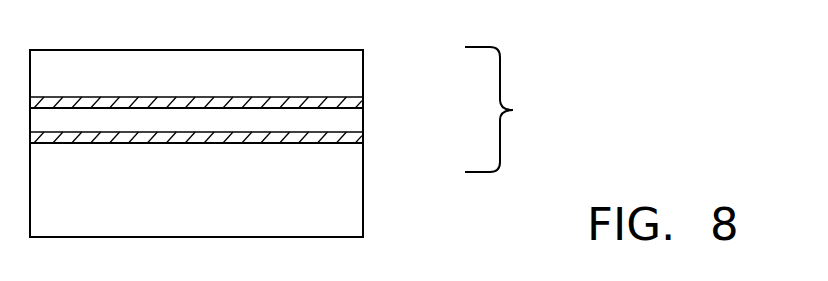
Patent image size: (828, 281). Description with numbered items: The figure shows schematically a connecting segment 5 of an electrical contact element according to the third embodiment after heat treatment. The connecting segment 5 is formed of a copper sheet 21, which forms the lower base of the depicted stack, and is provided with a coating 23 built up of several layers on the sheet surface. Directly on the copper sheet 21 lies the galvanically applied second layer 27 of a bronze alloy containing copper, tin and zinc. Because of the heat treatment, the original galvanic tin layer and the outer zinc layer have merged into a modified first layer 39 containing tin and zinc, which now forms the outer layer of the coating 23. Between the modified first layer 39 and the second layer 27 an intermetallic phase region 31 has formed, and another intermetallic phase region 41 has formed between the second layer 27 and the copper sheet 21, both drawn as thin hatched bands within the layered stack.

The connecting segment 5 is at (493, 193).
The modified first layer 39 is at (343, 75).
The intermetallic phase region 31 is at (355, 101).
The second layer 27 is at (345, 122).
The intermetallic phase region 41 is at (355, 139).
The copper sheet 21 is at (353, 214).
The coating 23 is at (508, 109).